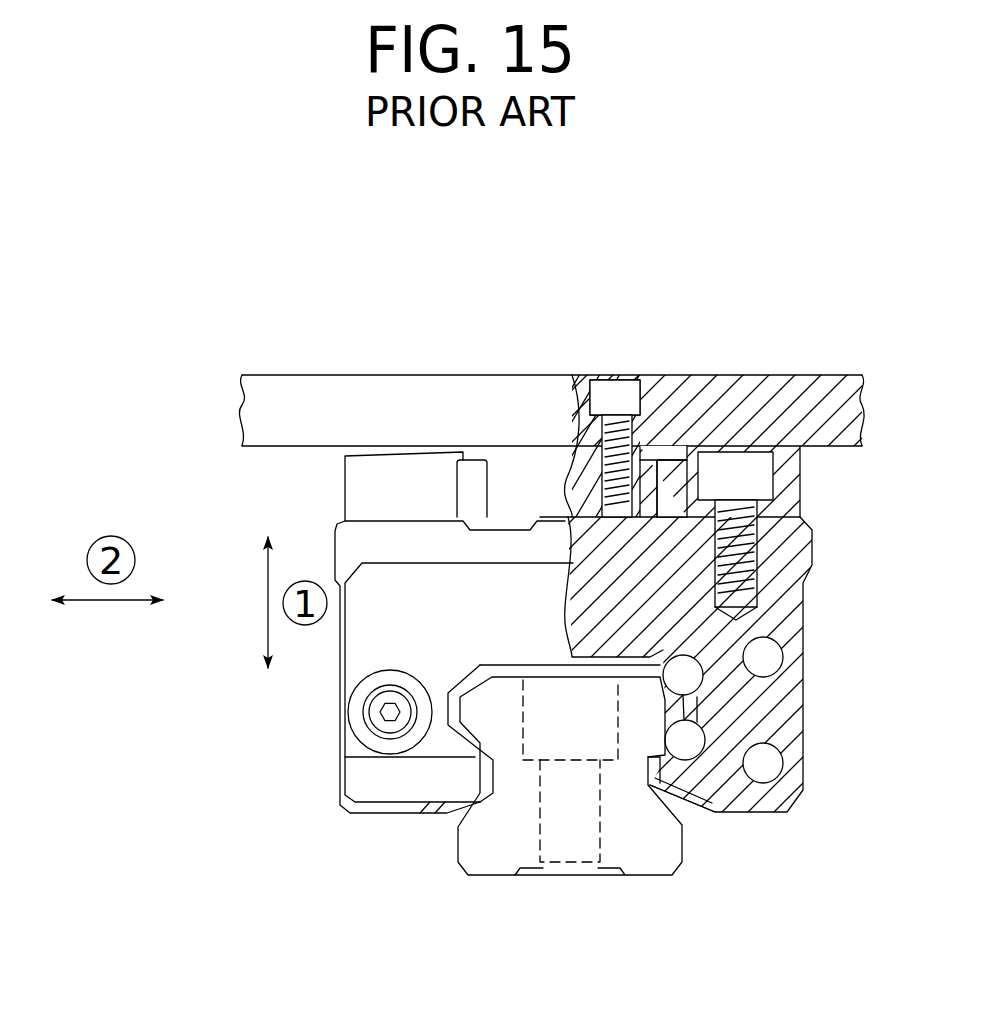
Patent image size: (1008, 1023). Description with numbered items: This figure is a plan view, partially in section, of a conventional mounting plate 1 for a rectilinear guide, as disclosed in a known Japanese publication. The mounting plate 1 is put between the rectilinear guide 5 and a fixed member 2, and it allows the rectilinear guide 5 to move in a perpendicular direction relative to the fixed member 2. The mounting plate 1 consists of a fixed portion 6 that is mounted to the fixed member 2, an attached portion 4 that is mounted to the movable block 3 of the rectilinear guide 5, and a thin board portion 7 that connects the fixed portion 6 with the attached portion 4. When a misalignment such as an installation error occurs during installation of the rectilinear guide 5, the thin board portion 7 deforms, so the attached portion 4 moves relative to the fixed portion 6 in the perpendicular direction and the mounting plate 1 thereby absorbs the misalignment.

The mounting plate 1 is at (512, 487).
The fixed member 2 is at (748, 385).
The movable block 3 is at (795, 570).
The attached portion 4 is at (803, 484).
The rectilinear guide 5 is at (822, 632).
The fixed portion 6 is at (547, 462).
The thin board portion 7 is at (673, 458).